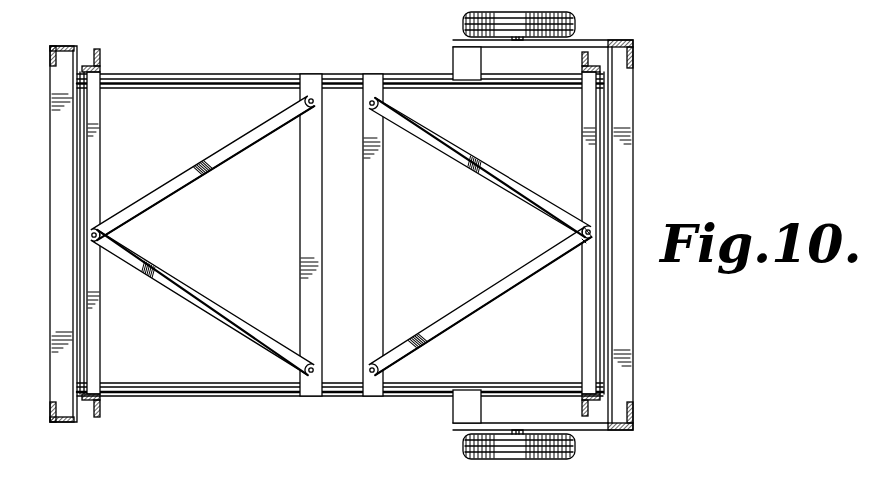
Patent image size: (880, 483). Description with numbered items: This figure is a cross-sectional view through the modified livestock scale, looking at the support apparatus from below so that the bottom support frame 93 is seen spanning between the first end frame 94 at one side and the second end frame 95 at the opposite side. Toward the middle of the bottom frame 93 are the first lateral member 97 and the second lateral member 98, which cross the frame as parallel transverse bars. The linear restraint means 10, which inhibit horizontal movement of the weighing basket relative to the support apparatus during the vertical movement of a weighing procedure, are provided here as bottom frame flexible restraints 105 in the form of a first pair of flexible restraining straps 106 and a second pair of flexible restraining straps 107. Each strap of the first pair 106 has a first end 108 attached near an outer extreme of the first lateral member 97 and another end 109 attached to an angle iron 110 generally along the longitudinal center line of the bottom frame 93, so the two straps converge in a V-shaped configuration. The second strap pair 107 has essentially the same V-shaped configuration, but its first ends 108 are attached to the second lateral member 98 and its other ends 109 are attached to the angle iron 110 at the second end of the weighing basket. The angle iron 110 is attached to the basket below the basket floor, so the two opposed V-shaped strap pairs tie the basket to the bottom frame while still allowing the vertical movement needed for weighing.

The linear restraint means 10 is at (493, 156).
The bottom support frame 93 is at (241, 77).
The first end frame 94 is at (626, 111).
The second end frame 95 is at (52, 291).
The first lateral member 97 is at (381, 223).
The second lateral member 98 is at (302, 163).
The bottom frame flexible restraints 105 is at (129, 207).
The first pair of flexible restraining straps 106 is at (533, 235).
The second pair of flexible restraining straps 107 is at (145, 230).
The strap first end 108 is at (397, 114).
The strap other end 109 is at (574, 237).
The angle iron 110 is at (585, 334).